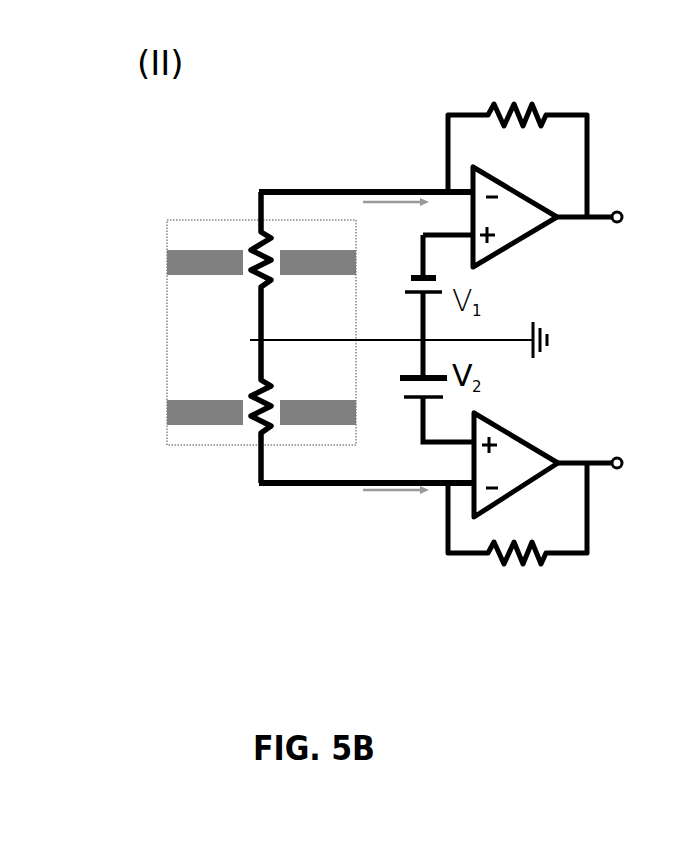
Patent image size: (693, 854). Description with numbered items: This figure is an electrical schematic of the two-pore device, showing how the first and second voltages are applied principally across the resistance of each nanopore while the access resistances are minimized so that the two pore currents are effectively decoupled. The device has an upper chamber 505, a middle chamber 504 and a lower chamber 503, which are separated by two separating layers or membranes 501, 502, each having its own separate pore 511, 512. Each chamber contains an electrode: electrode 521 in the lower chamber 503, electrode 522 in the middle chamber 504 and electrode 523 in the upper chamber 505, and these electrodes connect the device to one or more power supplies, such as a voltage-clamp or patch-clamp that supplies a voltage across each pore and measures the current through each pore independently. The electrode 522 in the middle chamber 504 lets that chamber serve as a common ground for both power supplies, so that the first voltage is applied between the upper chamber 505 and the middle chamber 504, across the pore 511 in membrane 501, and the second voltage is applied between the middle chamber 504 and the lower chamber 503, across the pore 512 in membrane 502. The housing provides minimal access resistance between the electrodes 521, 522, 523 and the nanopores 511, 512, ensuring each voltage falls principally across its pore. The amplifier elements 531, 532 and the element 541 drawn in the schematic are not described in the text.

The separating layer 501 is at (177, 263).
The separating layer 502 is at (177, 413).
The lower chamber 503 is at (200, 440).
The middle chamber 504 is at (202, 363).
The upper chamber 505 is at (228, 235).
The pore 511 is at (250, 262).
The pore 512 is at (245, 425).
The electrode 521 is at (272, 495).
The electrode 522 is at (250, 340).
The electrode 523 is at (272, 187).
The first amplifier 531 is at (542, 237).
The second amplifier 532 is at (540, 445).
The lower region 541 is at (167, 440).